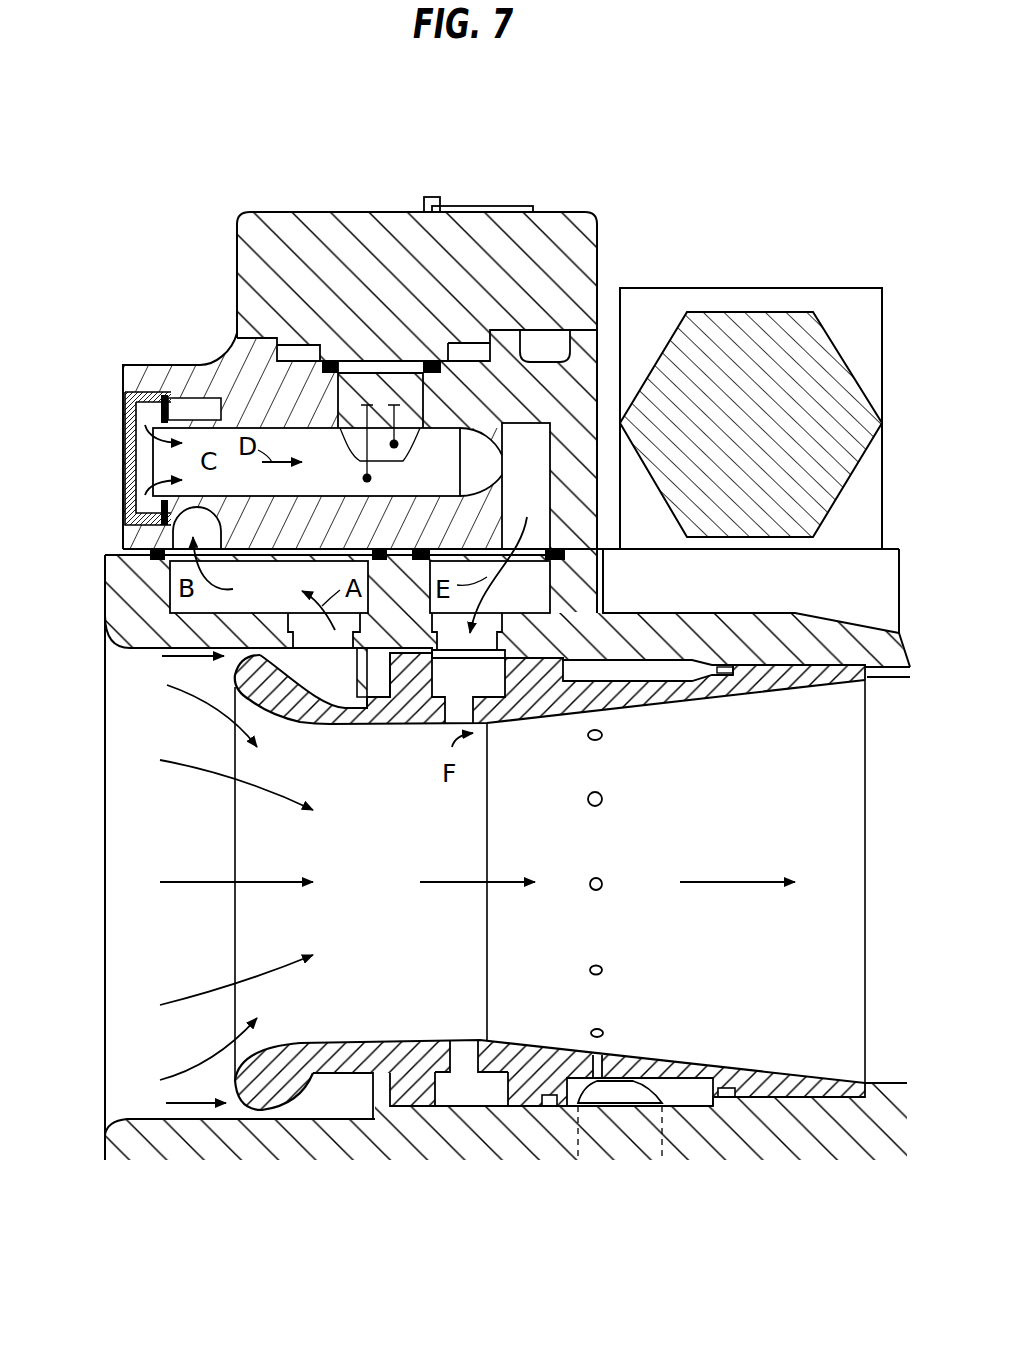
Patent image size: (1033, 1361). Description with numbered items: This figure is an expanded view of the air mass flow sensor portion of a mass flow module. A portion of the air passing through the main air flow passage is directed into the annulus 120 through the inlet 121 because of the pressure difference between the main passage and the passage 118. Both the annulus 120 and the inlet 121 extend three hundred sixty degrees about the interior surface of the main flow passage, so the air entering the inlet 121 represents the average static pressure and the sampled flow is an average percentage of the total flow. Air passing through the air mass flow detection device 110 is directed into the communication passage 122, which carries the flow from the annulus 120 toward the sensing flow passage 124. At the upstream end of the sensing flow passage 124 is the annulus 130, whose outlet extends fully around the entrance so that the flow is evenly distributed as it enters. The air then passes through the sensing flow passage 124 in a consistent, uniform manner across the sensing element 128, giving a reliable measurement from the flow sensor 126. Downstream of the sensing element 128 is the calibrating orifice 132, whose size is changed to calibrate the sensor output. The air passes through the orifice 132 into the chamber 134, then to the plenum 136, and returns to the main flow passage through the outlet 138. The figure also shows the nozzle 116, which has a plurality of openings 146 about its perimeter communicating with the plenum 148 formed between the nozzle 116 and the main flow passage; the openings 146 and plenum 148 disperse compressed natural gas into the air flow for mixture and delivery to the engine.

The air mass flow detection device 110 is at (595, 212).
The nozzle 116 is at (343, 1040).
The passage 118 is at (405, 940).
The annulus 120 is at (340, 680).
The inlet 121 is at (238, 660).
The communication passage 122 is at (172, 556).
The sensing flow passage 124 is at (345, 487).
The flow sensor 126 is at (452, 206).
The sensing element 128 is at (365, 418).
The annulus 130 is at (190, 408).
The calibrating orifice 132 is at (467, 465).
The chamber 134 is at (537, 595).
The plenum 136 is at (492, 680).
The outlet 138 is at (447, 727).
The openings 146 is at (603, 799).
The plenum 148 is at (655, 672).